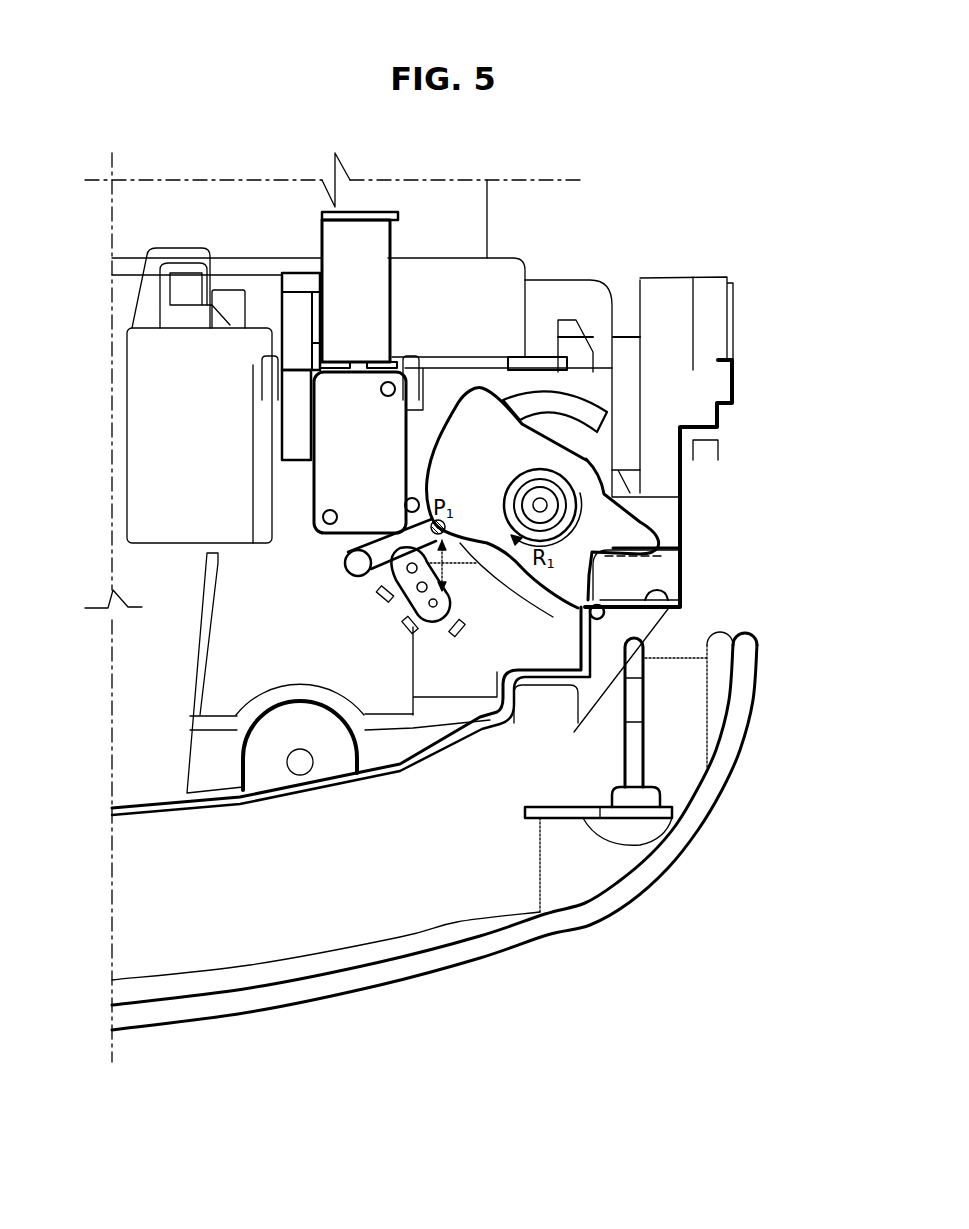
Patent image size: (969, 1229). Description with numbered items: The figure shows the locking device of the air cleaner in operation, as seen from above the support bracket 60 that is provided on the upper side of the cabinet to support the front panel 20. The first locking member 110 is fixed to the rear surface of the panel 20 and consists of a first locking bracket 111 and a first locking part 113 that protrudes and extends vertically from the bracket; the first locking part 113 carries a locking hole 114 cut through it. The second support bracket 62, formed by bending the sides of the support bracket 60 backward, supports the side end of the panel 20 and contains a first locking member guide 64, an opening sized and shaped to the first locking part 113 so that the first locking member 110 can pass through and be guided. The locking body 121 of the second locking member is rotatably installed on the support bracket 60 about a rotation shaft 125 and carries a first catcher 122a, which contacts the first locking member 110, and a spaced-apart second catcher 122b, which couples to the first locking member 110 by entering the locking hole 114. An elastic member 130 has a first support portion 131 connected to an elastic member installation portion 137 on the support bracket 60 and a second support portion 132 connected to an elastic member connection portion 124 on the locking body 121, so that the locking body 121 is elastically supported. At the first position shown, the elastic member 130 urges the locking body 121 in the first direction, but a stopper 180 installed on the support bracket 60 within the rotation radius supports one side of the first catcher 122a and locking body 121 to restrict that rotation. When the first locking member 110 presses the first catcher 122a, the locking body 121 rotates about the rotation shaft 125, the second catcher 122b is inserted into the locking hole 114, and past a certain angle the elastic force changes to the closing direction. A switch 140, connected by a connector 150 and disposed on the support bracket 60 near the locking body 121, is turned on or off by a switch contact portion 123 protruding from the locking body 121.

The front panel 20 is at (407, 970).
The support bracket 60 is at (137, 820).
The second support bracket 62 is at (678, 562).
The first locking member guide 64 is at (652, 610).
The first locking member 110 is at (790, 752).
The first locking bracket 111 is at (580, 812).
The first locking part 113 is at (637, 750).
The locking hole 114 is at (633, 677).
The locking body 121 is at (573, 467).
The first catcher 122a is at (648, 532).
The second catcher 122b is at (565, 614).
The switch contact portion 123 is at (470, 400).
The elastic member connection portion 124 is at (432, 520).
The rotation shaft 125 is at (538, 503).
The elastic member 130 is at (283, 540).
The first support portion 131 is at (373, 592).
The second support portion 132 is at (347, 545).
The elastic member installation portion 137 is at (430, 622).
The switch 140 is at (340, 473).
The connector 150 is at (338, 294).
The stopper 180 is at (572, 372).